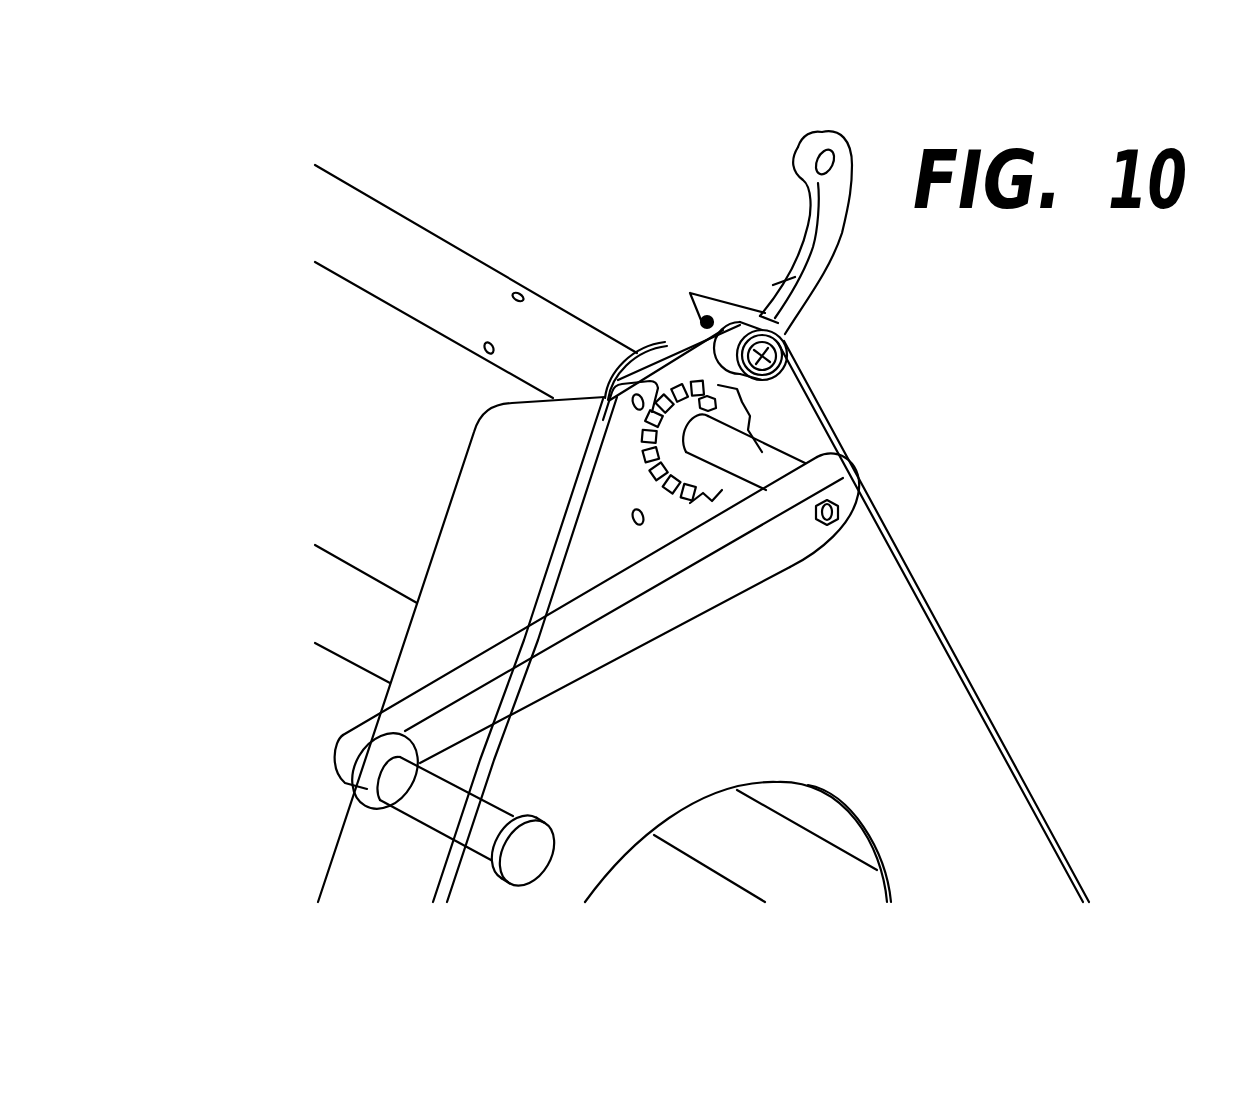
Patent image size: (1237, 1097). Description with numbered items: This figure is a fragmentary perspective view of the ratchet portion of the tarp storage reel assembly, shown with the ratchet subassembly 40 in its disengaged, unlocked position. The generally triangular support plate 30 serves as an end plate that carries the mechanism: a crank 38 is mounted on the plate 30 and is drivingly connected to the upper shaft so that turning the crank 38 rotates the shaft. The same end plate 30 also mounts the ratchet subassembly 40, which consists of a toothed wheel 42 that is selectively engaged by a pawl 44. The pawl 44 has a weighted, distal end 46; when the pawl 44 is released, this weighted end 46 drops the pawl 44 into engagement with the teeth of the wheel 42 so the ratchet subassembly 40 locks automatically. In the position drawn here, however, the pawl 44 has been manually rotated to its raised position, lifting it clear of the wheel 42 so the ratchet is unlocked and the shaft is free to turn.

The support plate 30 is at (942, 623).
The crank 38 is at (336, 762).
The ratchet subassembly 40 is at (590, 193).
The toothed wheel 42 is at (645, 456).
The pawl 44 is at (813, 282).
The weighted distal end 46 is at (814, 130).